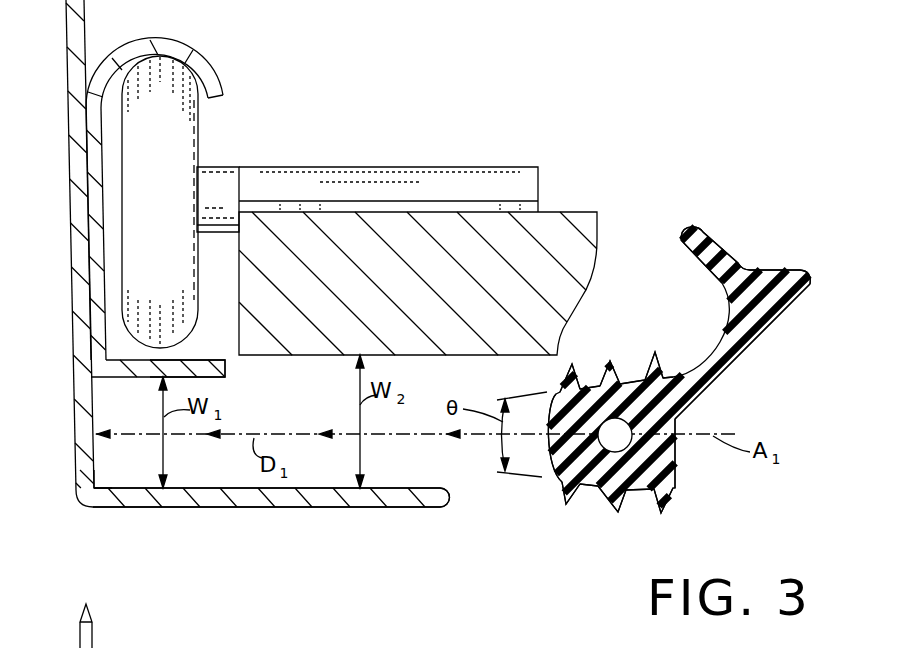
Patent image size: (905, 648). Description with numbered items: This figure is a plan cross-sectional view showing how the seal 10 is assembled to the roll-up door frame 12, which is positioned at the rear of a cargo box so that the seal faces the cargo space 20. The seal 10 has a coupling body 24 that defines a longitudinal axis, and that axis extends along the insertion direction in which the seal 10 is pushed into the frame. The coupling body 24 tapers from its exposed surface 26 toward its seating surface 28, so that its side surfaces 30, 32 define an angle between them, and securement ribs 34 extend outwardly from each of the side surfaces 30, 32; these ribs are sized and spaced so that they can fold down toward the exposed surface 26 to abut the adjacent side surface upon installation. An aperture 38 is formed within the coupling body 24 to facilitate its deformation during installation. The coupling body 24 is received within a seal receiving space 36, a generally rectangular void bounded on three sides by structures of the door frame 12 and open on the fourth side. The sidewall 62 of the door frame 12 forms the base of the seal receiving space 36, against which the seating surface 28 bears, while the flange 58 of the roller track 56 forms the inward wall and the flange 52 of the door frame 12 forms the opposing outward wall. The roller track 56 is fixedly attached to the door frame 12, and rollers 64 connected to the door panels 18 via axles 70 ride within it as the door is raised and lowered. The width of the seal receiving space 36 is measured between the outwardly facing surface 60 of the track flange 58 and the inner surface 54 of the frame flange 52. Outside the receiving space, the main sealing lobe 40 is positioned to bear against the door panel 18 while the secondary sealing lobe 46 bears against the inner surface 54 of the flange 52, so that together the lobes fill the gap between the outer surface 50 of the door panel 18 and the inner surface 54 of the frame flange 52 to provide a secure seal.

The seal 10 is at (738, 201).
The roll-up door frame 12 is at (143, 503).
The door panel 18 is at (546, 217).
The cargo space 20 is at (430, 50).
The coupling body 24 is at (668, 455).
The exposed surface 26 is at (674, 478).
The seating surface 28 is at (542, 452).
The side surface 30 is at (624, 382).
The side surface 32 is at (629, 492).
The securement ribs 34 is at (608, 366).
The seal receiving space 36 is at (116, 453).
The aperture 38 is at (620, 430).
The main sealing lobe 40 is at (748, 352).
The secondary sealing lobe 46 is at (773, 272).
The outer surface 50 is at (448, 356).
The flange 52 is at (393, 505).
The inner surface 54 is at (442, 477).
The roller track 56 is at (212, 78).
The flange 58 is at (140, 372).
The outwardly facing surface 60 is at (207, 378).
The sidewall 62 is at (73, 216).
The rollers 64 is at (178, 126).
The axles 70 is at (222, 180).